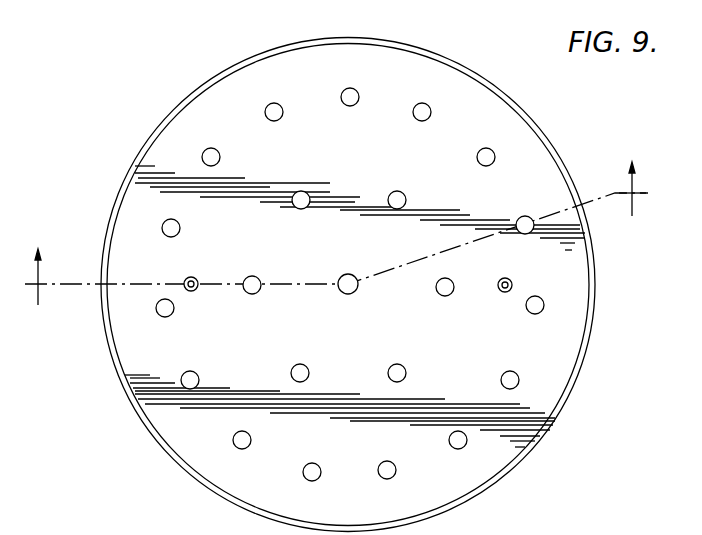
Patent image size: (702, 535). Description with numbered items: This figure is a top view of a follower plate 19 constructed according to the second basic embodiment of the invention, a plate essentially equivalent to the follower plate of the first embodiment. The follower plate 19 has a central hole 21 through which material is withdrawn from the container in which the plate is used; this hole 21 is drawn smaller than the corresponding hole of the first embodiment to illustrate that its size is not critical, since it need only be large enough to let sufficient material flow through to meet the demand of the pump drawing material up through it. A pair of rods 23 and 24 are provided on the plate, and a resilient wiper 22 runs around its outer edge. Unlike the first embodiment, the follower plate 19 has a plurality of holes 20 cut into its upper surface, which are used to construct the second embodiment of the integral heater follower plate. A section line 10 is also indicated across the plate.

The section line 10- 10 is at (343, 233).
The follower plate 19 is at (251, 50).
The holes 20 is at (418, 120).
The hole 21 is at (349, 294).
The resilient wiper 22 is at (598, 234).
The rod 23 is at (498, 281).
The rod 24 is at (197, 279).